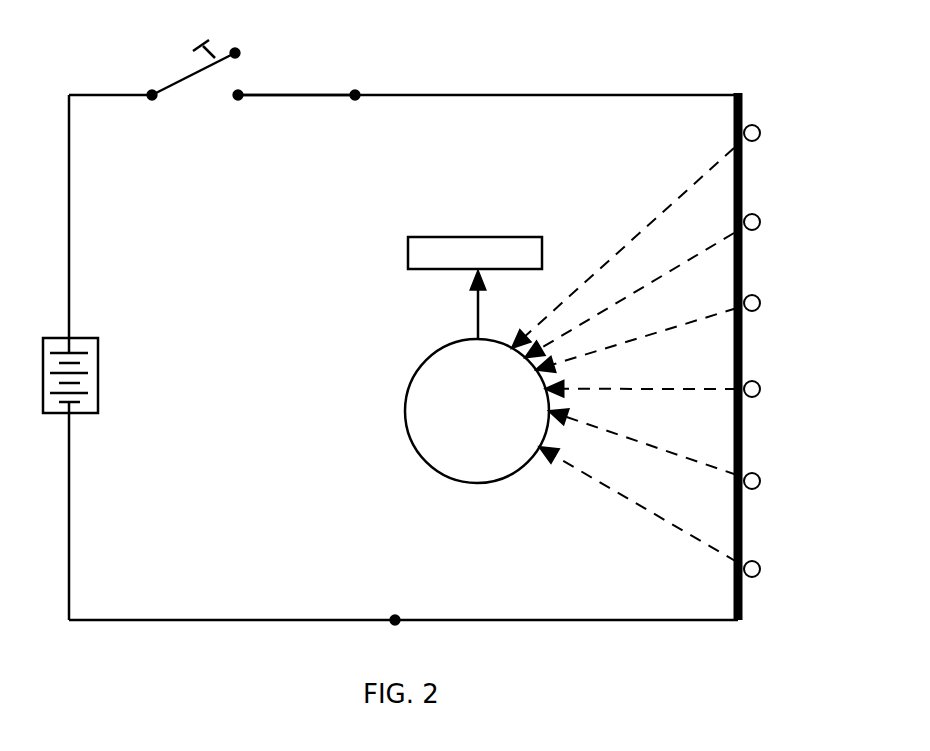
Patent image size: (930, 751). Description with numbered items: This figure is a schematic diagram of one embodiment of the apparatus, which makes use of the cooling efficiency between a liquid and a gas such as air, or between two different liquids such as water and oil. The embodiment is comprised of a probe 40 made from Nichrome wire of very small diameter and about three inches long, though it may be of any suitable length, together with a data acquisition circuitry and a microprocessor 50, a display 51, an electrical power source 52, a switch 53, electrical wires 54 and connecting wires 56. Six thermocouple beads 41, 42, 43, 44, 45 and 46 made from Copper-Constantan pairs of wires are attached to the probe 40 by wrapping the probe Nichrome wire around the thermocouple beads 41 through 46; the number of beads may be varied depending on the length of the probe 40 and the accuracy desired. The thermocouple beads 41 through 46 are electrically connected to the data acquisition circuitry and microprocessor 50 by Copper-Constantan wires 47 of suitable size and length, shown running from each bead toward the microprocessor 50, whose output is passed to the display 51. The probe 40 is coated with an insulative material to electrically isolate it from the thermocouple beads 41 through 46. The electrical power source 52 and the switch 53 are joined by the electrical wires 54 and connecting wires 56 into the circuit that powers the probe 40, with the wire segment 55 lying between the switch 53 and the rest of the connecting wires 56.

The probe 40 is at (745, 110).
The thermocouple bead 41 is at (759, 137).
The thermocouple bead 42 is at (759, 226).
The thermocouple bead 43 is at (759, 307).
The thermocouple bead 44 is at (759, 393).
The thermocouple bead 45 is at (759, 485).
The thermocouple bead 46 is at (759, 573).
The Copper-Constantan wires 47 is at (644, 226).
The data acquisition circuitry and microprocessor 50 is at (403, 404).
The display 51 is at (466, 237).
The electrical power source 52 is at (99, 375).
The switch 53 is at (183, 78).
The electrical wires 54 is at (70, 206).
The conductor segment 55 is at (303, 95).
The connecting wires 56 is at (540, 95).